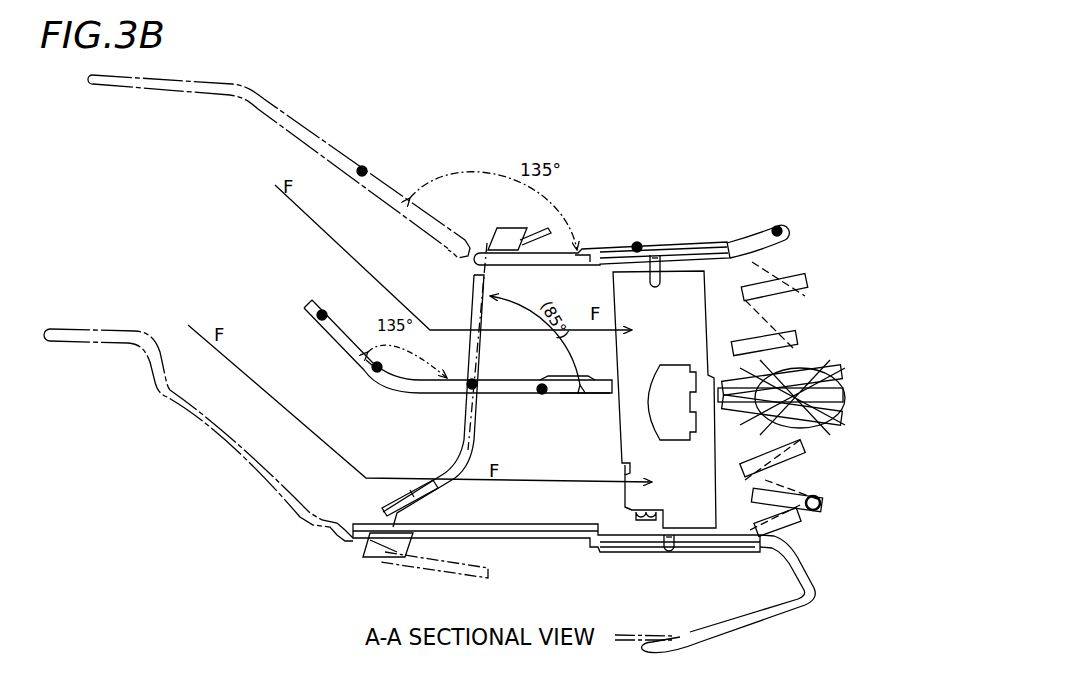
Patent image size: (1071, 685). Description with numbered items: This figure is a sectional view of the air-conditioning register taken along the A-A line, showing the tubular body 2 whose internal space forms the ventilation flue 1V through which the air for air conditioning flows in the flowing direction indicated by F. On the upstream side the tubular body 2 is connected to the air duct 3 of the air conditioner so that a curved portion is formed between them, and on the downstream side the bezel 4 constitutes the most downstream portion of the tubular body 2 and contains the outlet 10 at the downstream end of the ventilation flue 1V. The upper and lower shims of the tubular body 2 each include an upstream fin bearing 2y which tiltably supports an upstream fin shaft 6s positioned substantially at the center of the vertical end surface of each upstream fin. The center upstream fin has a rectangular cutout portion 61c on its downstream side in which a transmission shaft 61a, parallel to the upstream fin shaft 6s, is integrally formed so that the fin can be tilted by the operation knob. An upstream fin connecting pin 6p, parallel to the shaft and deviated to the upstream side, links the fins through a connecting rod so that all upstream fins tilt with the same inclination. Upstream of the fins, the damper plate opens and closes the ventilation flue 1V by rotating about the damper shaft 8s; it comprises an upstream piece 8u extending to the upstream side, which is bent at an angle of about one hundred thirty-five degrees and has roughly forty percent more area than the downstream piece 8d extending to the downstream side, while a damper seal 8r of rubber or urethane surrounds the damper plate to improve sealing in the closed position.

The tubular body 2 is at (637, 247).
The air duct 3 is at (362, 171).
The bezel 4 is at (777, 231).
The outlet 10 is at (833, 316).
The upstream fin bearing 2y is at (657, 258).
The upstream fin shaft 6s is at (660, 260).
The upstream fin connecting pin 6p is at (644, 515).
The rectangular cutout portion 61c is at (662, 388).
The transmission shaft 61a is at (672, 402).
The ventilation flue 1V is at (585, 411).
The downstream piece 8d is at (542, 389).
The damper shaft 8s is at (472, 384).
The upstream piece 8u is at (377, 367).
The damper seal 8r is at (322, 315).